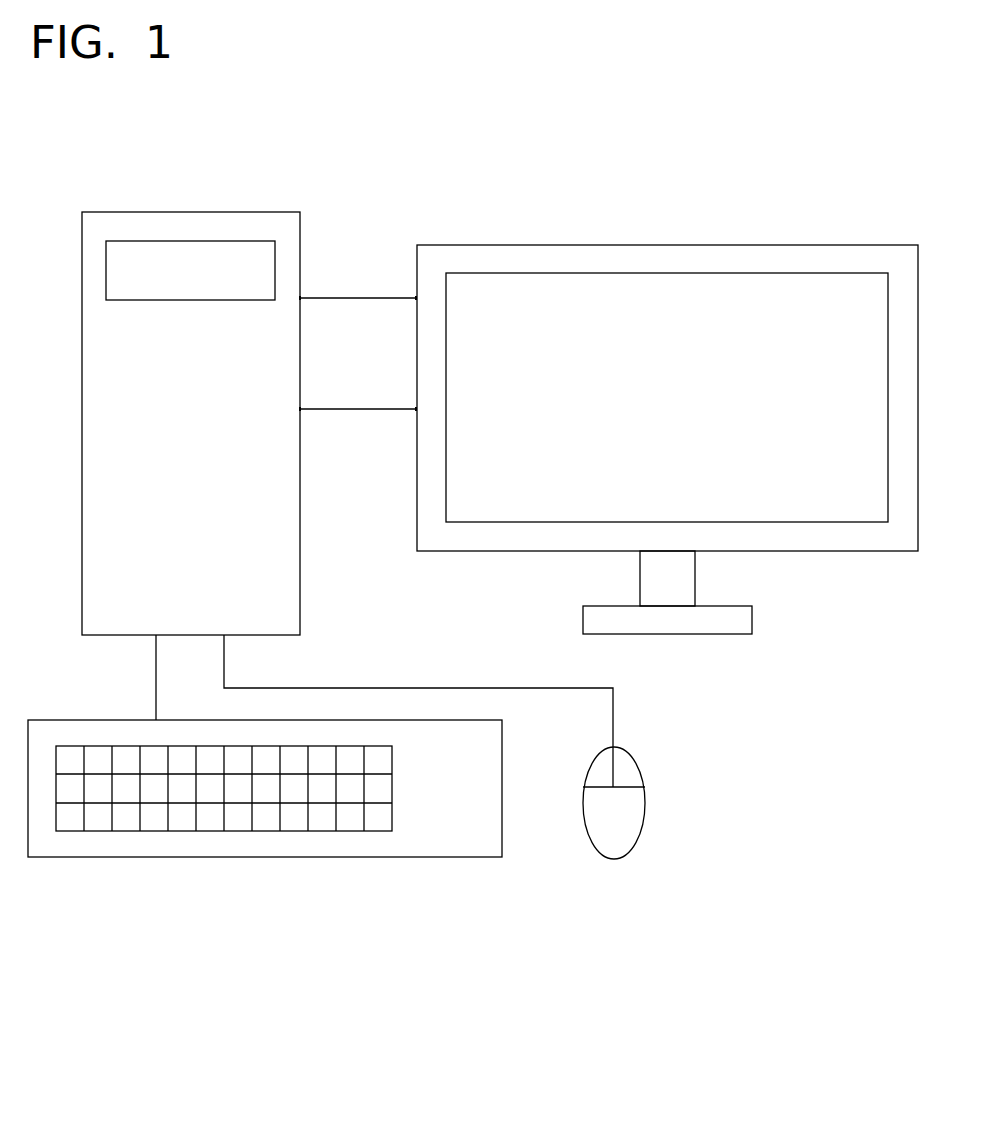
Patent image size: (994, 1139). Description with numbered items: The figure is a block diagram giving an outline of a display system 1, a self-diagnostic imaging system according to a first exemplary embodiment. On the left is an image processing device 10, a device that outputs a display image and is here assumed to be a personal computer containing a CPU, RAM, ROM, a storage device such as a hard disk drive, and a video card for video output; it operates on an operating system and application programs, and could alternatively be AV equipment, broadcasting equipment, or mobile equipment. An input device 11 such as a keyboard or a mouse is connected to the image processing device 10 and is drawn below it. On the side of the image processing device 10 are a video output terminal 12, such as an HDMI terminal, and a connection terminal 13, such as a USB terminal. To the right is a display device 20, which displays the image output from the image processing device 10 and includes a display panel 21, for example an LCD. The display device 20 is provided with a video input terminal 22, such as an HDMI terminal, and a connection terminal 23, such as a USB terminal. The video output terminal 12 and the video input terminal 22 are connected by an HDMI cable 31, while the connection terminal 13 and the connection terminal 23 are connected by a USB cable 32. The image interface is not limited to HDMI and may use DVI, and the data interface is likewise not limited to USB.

The display system 1 is at (486, 138).
The image processing device 10 is at (240, 210).
The input device 11 is at (556, 892).
The video output terminal 12 is at (302, 298).
The connection terminal 13 is at (302, 409).
The display device 20 is at (860, 245).
The display panel 21 is at (660, 317).
The video input terminal 22 is at (415, 298).
The connection terminal 23 is at (415, 409).
The HDMI cable 31 is at (345, 298).
The USB cable 32 is at (360, 409).